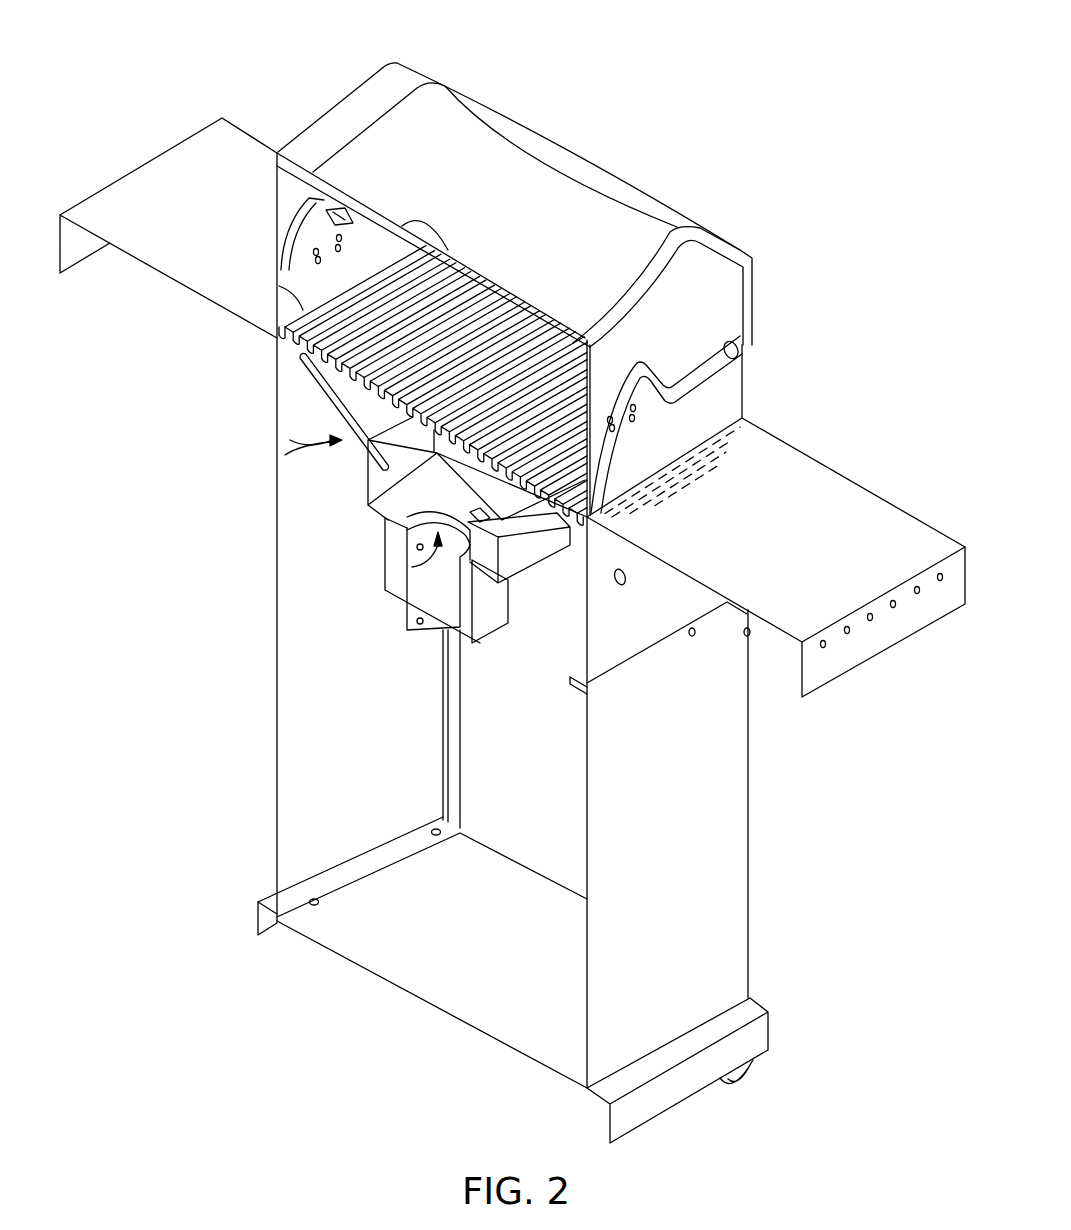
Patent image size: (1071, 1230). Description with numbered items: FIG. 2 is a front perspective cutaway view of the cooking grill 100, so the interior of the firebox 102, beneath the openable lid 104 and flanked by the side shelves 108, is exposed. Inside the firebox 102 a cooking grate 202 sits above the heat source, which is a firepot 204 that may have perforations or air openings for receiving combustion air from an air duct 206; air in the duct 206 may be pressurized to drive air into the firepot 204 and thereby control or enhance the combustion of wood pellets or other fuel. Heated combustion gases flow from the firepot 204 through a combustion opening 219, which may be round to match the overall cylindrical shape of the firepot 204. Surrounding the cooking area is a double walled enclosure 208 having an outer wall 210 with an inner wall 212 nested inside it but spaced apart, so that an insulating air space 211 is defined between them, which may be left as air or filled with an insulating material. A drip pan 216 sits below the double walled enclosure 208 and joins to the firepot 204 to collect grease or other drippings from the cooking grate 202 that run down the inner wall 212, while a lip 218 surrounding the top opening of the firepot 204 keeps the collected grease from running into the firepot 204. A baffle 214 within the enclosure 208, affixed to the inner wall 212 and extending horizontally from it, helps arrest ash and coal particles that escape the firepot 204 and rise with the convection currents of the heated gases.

The grill 100 is at (701, 72).
The firebox 102 is at (732, 386).
The openable lid 104 is at (535, 172).
The side shelves 108 is at (893, 513).
The cooking grate 202 is at (305, 308).
The firepot 204 is at (415, 585).
The air duct 206 is at (490, 613).
The double walled enclosure 208 is at (285, 455).
The outer wall 210 is at (290, 440).
The insulating air space 211 is at (560, 543).
The inner wall 212 is at (303, 377).
The baffle 214 is at (524, 495).
The drip pan 216 is at (372, 512).
The lip 218 is at (460, 592).
The combustion opening 219 is at (412, 567).